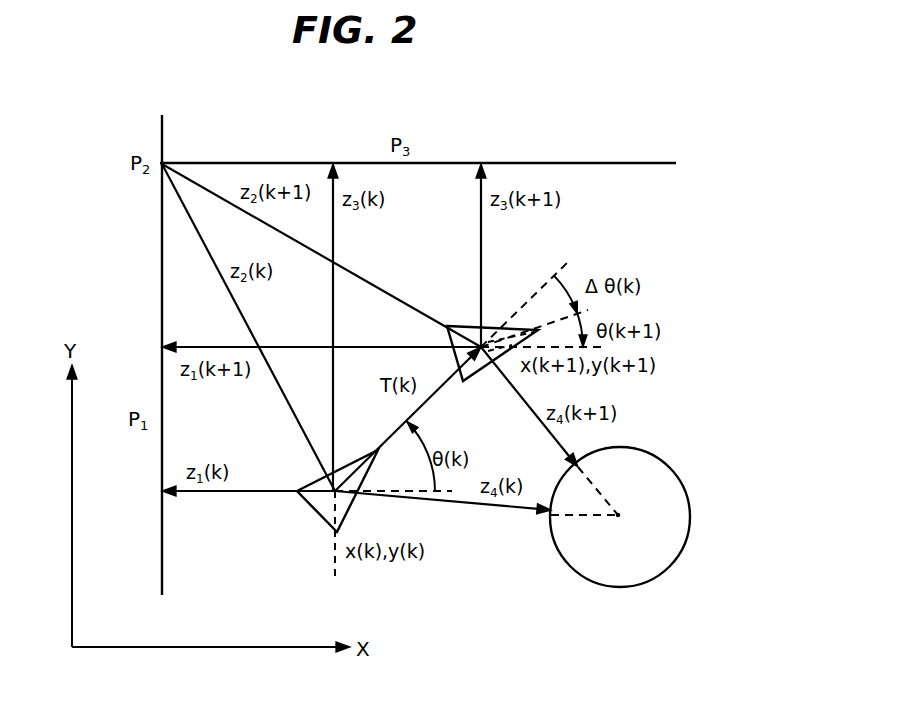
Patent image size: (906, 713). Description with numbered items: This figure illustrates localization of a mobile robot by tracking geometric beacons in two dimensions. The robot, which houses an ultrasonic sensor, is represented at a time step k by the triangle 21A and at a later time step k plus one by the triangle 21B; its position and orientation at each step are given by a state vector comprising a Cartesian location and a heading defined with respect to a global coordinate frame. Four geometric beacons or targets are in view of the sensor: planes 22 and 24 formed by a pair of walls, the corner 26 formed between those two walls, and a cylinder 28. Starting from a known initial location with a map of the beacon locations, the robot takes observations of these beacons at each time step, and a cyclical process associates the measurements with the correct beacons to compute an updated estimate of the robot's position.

The triangle 21A is at (318, 511).
The triangle 21B is at (462, 326).
The plane 22 is at (162, 251).
The plane 24 is at (283, 162).
The corner 26 is at (162, 125).
The cylinder 28 is at (689, 500).